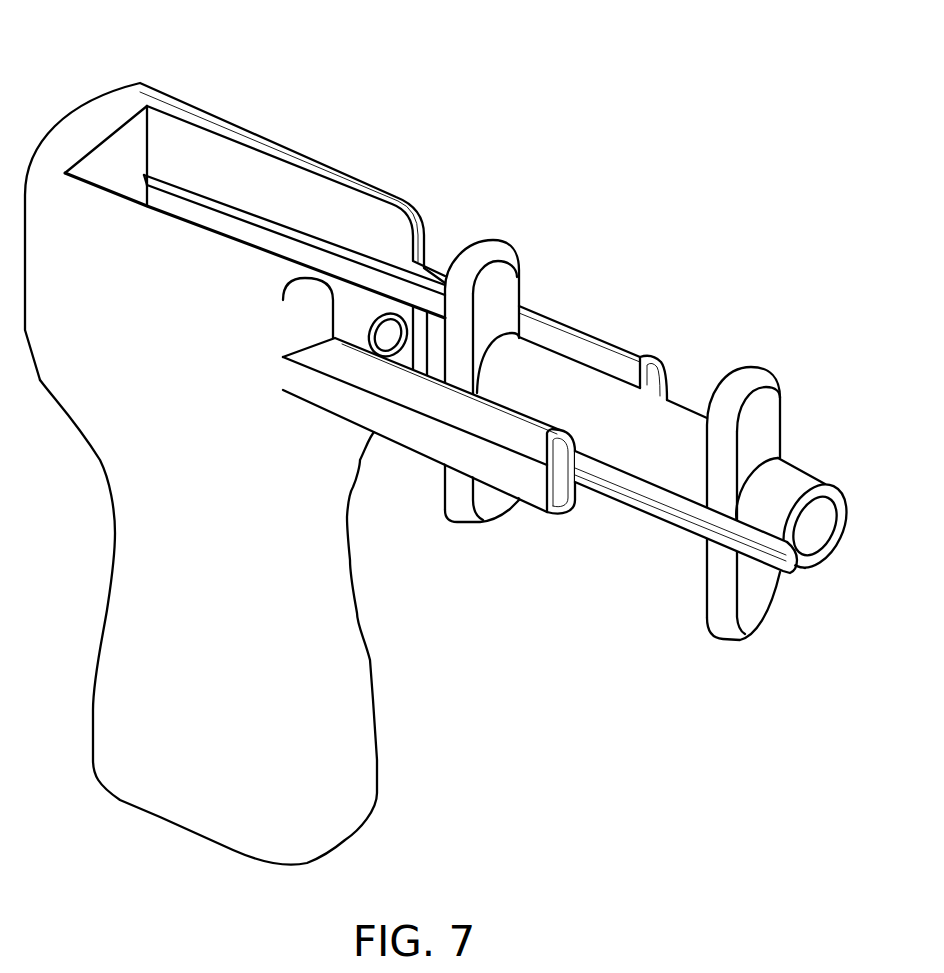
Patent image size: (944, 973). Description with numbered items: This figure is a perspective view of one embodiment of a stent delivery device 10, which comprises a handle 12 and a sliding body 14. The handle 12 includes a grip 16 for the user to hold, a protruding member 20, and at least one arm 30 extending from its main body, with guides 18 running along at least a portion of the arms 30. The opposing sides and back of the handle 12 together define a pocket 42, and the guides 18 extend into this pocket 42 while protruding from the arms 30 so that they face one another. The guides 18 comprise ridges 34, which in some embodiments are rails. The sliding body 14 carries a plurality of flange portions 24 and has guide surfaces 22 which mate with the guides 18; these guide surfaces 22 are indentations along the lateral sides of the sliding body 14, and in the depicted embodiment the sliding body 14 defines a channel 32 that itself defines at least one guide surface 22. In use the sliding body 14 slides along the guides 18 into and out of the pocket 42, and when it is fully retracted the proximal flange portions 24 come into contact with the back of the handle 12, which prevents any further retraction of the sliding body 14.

The stent delivery device 10 is at (243, 454).
The handle 12 is at (243, 309).
The sliding body 14 is at (579, 440).
The grip 16 is at (352, 606).
The guide 18 is at (424, 289).
The protruding member 20 is at (359, 308).
The guide surface 22 is at (647, 496).
The flange portion 24 is at (489, 506).
The arm 30 is at (623, 353).
The channel 32 is at (790, 548).
The ridge 34 is at (245, 230).
The pocket 42 is at (321, 200).